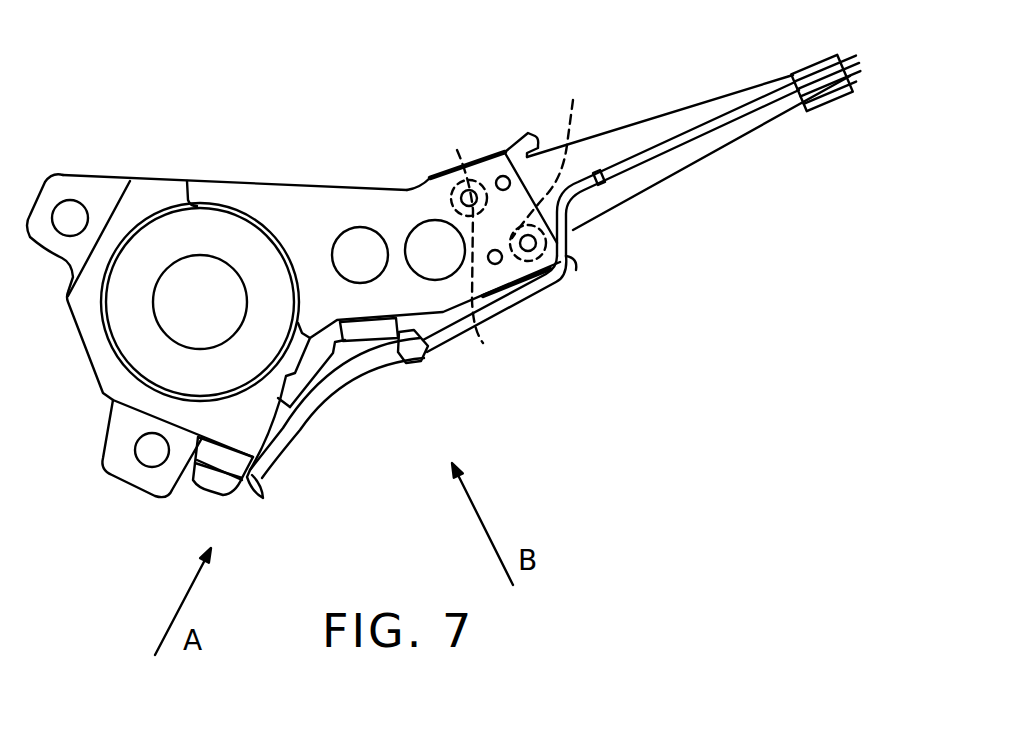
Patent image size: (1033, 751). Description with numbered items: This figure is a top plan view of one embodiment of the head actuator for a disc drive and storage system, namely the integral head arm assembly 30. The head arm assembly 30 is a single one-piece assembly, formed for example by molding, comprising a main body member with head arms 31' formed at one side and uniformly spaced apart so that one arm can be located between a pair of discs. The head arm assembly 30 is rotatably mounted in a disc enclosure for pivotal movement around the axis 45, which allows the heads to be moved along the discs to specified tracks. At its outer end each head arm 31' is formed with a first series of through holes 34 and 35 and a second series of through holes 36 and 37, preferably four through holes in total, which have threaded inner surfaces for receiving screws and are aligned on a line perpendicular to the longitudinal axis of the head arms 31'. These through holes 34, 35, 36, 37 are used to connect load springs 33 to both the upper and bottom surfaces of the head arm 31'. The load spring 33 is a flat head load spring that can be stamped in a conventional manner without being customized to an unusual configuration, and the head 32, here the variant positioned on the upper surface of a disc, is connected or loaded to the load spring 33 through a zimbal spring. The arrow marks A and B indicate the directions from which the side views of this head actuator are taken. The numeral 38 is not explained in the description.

The head arm assembly 30 is at (161, 168).
The axis 45 is at (204, 270).
The head arm 31' is at (442, 165).
The through hole 35 is at (465, 185).
The through hole 37 is at (503, 175).
The through hole 36 is at (530, 262).
The flexible wiring path 38 is at (525, 226).
The load spring 33 is at (690, 158).
The through hole 34 is at (560, 280).
The head 32 is at (813, 67).